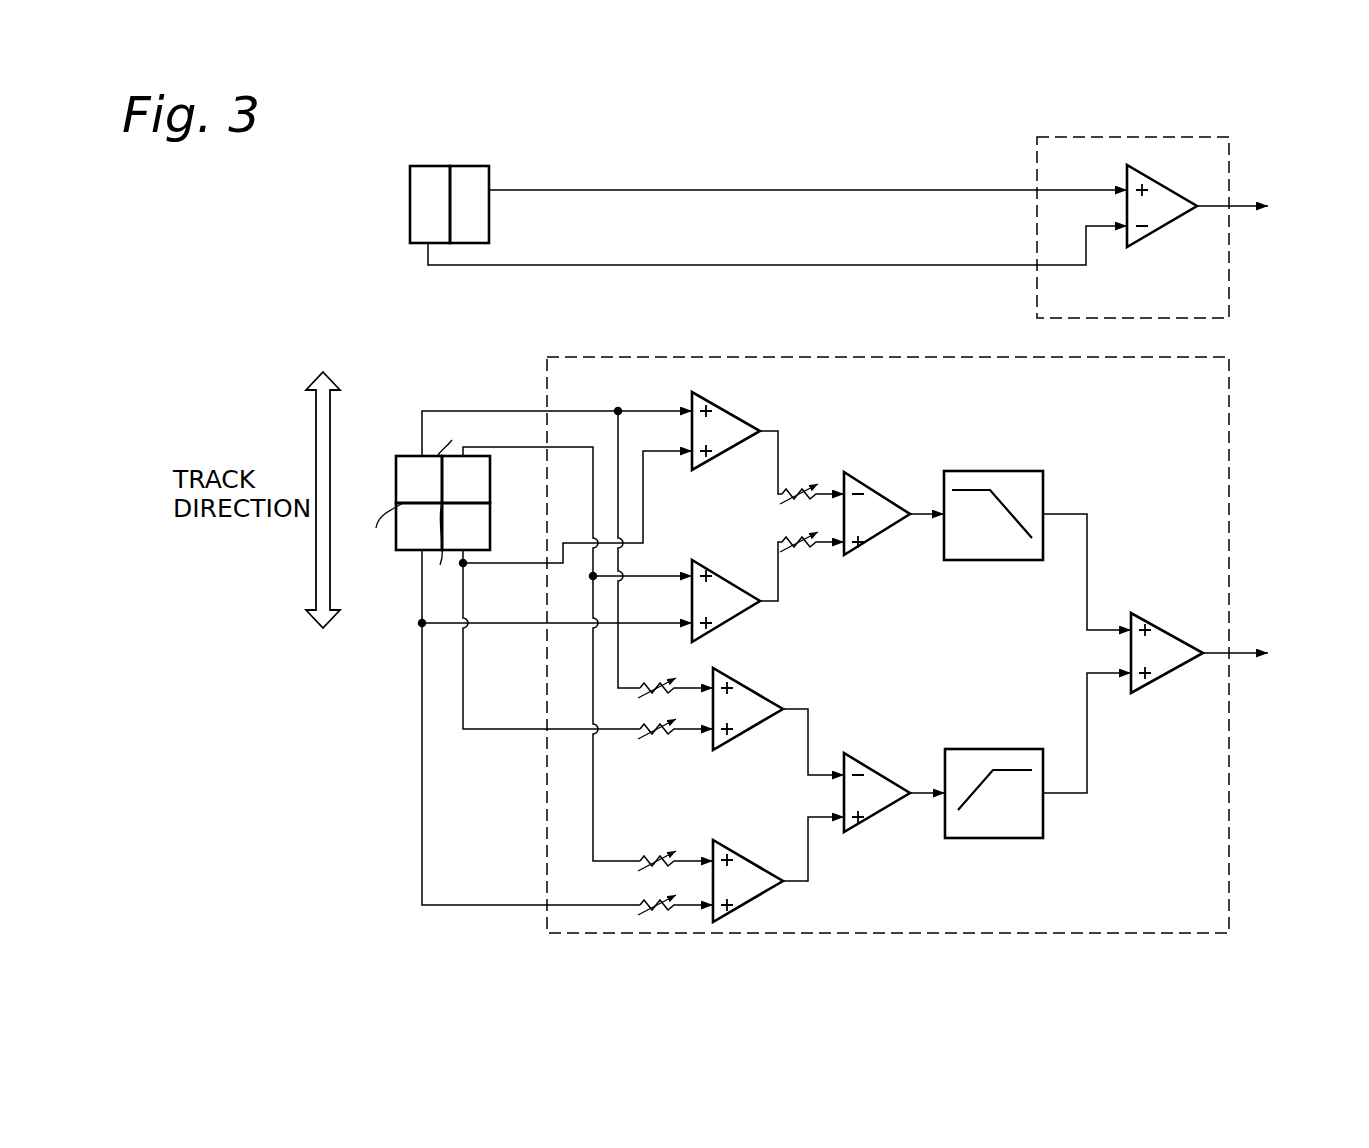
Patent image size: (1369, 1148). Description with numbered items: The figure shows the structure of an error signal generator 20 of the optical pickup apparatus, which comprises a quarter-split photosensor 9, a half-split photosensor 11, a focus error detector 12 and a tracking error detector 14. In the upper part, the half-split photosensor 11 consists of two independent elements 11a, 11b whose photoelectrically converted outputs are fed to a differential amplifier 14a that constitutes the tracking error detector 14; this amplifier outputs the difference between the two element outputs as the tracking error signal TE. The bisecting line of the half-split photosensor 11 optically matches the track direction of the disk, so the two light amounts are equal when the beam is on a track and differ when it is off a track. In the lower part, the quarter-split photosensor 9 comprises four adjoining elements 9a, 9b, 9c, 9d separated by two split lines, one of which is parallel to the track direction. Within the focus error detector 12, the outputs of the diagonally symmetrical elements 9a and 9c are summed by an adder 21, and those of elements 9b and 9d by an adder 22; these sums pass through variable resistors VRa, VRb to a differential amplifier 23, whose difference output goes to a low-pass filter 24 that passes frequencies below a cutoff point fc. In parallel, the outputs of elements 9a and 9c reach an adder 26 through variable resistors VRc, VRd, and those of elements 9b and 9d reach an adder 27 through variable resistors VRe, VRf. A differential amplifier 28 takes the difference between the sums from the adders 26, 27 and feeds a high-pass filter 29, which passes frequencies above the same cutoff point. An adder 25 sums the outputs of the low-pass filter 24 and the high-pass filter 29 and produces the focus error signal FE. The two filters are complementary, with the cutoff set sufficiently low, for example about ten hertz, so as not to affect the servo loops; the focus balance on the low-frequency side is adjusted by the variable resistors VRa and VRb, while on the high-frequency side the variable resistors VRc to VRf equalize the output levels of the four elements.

The quarter-split photosensor 9 is at (398, 456).
The element 9a is at (419, 479).
The element 9b is at (419, 526).
The element 9c is at (466, 526).
The element 9d is at (466, 479).
The half-split photosensor 11 is at (482, 160).
The element 11a is at (410, 182).
The element 11b is at (489, 186).
The focus error detector 12 is at (764, 356).
The tracking error detector 14 is at (1037, 170).
The differential amplifier 14a is at (1165, 225).
The error signal generator 20 is at (758, 146).
The adder 21 is at (714, 403).
The adder 22 is at (732, 582).
The differential amplifier 23 is at (888, 498).
The low-pass filter 24 is at (1006, 471).
The adder 25 is at (1160, 628).
The adder 26 is at (755, 691).
The adder 27 is at (762, 866).
The differential amplifier 28 is at (888, 778).
The high-pass filter 29 is at (1010, 749).
The variable resistor VRa is at (812, 484).
The variable resistor VRb is at (812, 532).
The variable resistor VRc is at (673, 678).
The variable resistor VRd is at (673, 719).
The variable resistor VRe is at (673, 851).
The variable resistor VRf is at (673, 895).